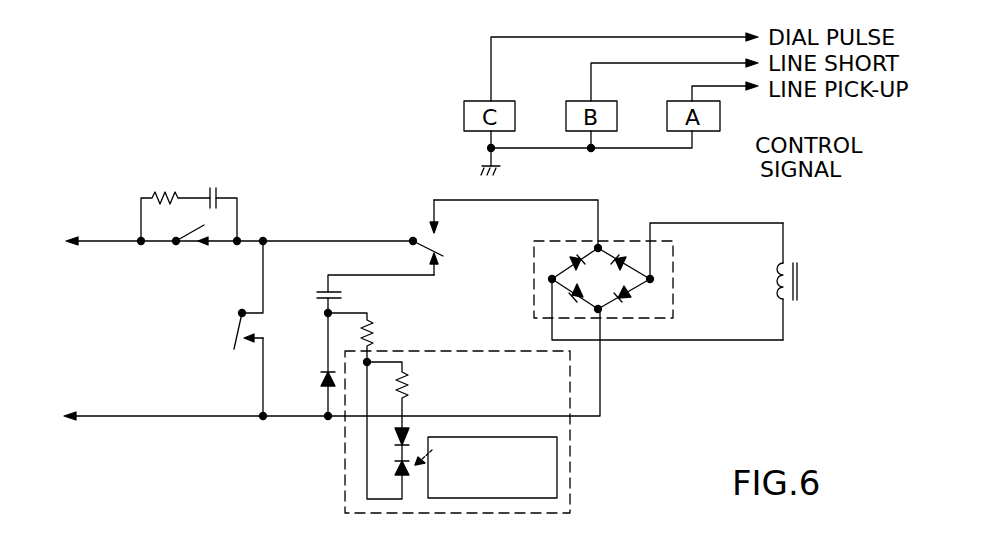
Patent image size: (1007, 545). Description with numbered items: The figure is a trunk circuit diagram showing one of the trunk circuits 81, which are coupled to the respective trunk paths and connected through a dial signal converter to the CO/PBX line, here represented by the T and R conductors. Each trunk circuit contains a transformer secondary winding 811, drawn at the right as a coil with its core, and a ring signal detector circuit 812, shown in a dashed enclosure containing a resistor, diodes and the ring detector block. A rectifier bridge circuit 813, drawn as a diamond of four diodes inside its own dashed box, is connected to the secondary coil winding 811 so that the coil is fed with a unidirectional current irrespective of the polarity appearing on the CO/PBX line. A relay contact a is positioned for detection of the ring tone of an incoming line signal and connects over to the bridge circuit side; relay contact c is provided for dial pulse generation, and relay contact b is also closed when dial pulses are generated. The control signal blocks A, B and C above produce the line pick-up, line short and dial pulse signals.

The trunk circuits 81 is at (308, 171).
The transformer secondary winding 811 is at (798, 280).
The ring signal detector circuit 812 is at (570, 470).
The rectifier bridge circuit 813 is at (673, 265).